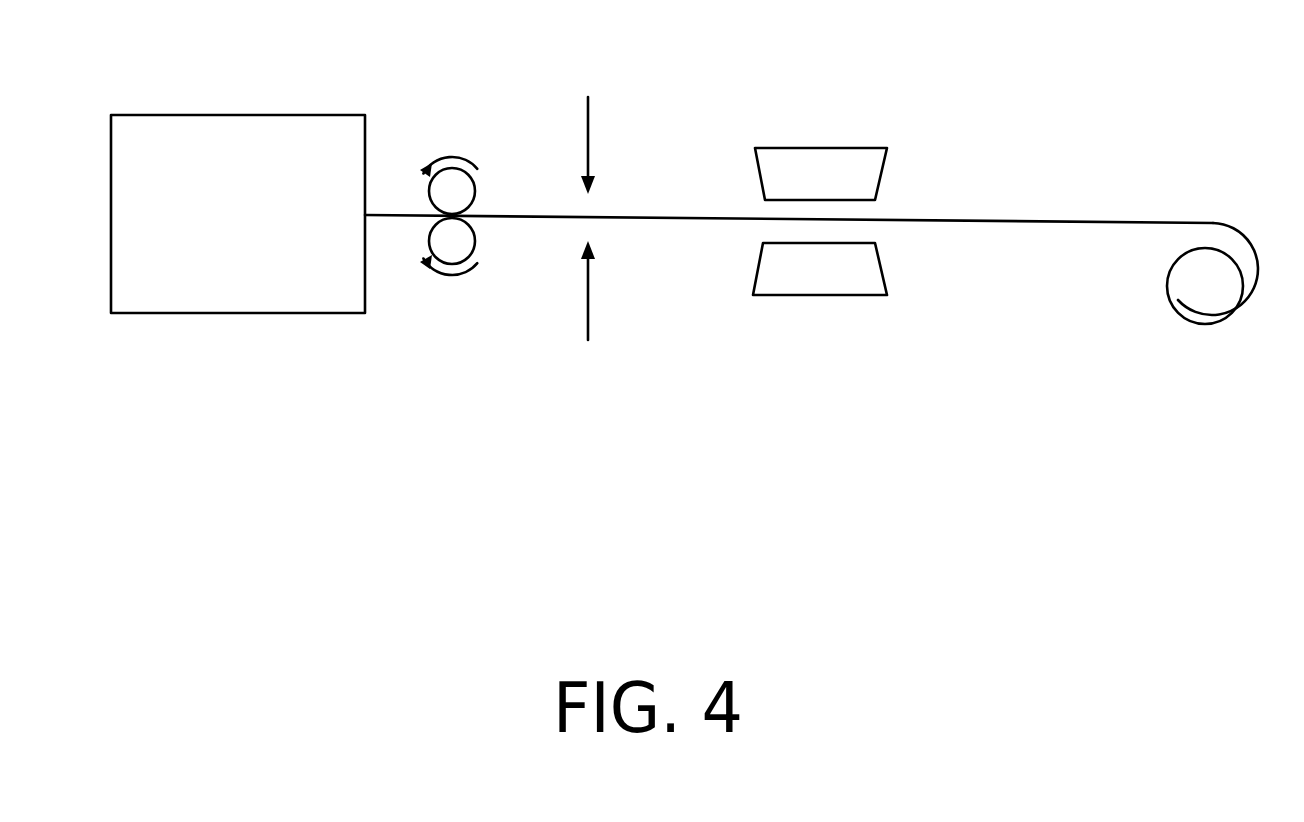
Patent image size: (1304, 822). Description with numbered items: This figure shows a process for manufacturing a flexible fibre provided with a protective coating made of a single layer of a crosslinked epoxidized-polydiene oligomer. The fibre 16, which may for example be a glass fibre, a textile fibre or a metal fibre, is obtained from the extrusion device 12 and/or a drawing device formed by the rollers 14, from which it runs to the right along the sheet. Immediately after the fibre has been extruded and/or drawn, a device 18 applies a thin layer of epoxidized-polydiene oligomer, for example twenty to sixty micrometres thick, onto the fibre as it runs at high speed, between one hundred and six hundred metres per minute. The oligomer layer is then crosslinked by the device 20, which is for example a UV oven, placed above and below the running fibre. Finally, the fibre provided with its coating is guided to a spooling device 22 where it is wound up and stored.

The extrusion device 12 is at (472, 357).
The rollers 14 is at (452, 192).
The fibre 16 is at (549, 200).
The device for applying a thin layer 18 is at (589, 248).
The crosslinking device 20 is at (858, 283).
The spooling device 22 is at (1203, 295).